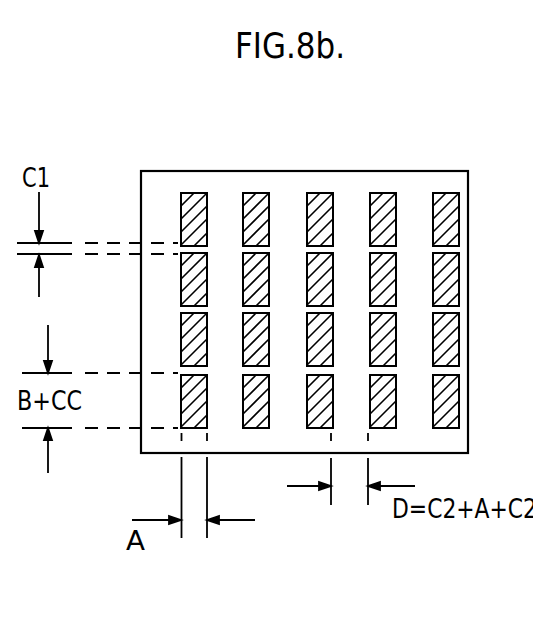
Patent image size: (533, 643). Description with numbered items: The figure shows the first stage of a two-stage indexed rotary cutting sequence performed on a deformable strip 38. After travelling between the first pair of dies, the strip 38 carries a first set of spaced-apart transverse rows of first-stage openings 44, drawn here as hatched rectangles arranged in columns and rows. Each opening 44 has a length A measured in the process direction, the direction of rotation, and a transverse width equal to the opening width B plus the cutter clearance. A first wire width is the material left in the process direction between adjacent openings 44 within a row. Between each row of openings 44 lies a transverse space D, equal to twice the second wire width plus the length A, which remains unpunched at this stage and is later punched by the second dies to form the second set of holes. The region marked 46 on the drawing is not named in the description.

The strip 38 is at (160, 171).
The first-stage openings 44 is at (256, 193).
The electrode column 46 is at (223, 415).